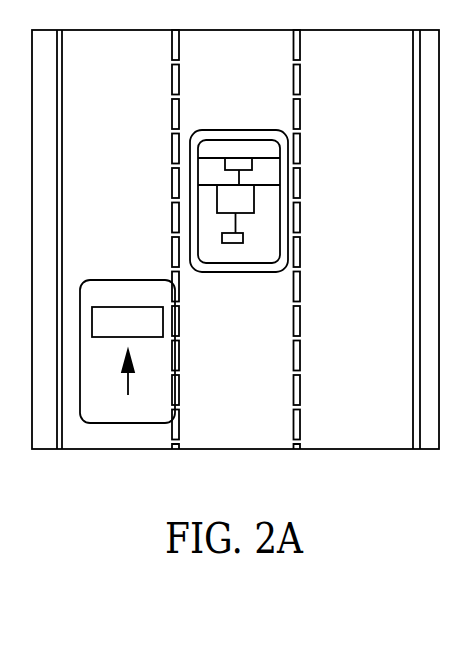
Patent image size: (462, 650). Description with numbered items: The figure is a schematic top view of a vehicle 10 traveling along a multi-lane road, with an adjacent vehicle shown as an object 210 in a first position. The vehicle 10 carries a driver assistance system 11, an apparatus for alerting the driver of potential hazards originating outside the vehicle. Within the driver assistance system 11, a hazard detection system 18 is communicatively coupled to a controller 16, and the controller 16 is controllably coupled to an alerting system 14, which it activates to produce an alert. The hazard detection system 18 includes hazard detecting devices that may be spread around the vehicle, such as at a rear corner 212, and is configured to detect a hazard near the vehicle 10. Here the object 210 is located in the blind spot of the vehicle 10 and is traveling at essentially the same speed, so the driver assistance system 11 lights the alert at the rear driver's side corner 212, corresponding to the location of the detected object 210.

The vehicle 10 is at (273, 241).
The driver assistance system 11 is at (286, 211).
The alerting system 14 is at (221, 238).
The controller 16 is at (216, 202).
The hazard detection system 18 is at (239, 158).
The object 210 is at (160, 387).
The rear corner 212 is at (202, 260).